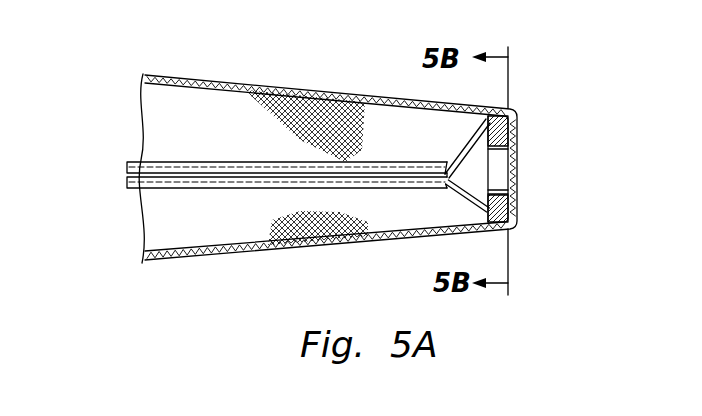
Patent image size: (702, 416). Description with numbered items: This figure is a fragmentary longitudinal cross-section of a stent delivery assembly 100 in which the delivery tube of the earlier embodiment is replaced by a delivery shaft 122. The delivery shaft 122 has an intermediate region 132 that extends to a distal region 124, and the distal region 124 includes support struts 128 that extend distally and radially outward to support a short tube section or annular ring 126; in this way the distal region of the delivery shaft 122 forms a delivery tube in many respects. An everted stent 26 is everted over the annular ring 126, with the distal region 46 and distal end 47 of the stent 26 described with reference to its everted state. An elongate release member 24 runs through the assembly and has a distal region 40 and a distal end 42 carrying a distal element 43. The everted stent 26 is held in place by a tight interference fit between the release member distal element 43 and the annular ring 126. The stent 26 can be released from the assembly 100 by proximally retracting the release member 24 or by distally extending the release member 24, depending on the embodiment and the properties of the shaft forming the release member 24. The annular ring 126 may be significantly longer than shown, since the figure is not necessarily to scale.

The stent delivery assembly 100 is at (257, 64).
The elongate release member 24 is at (146, 165).
The intermediate region 132 is at (146, 188).
The delivery shaft 122 is at (177, 186).
The stent 26 is at (312, 254).
The distal region 40 is at (423, 165).
The distal region 124 is at (443, 187).
The support struts 128 is at (468, 147).
The distal region 46 is at (514, 113).
The annular ring 126 is at (512, 123).
The distal end 47 is at (507, 148).
The distal end 42 is at (507, 173).
The distal element 43 is at (507, 185).